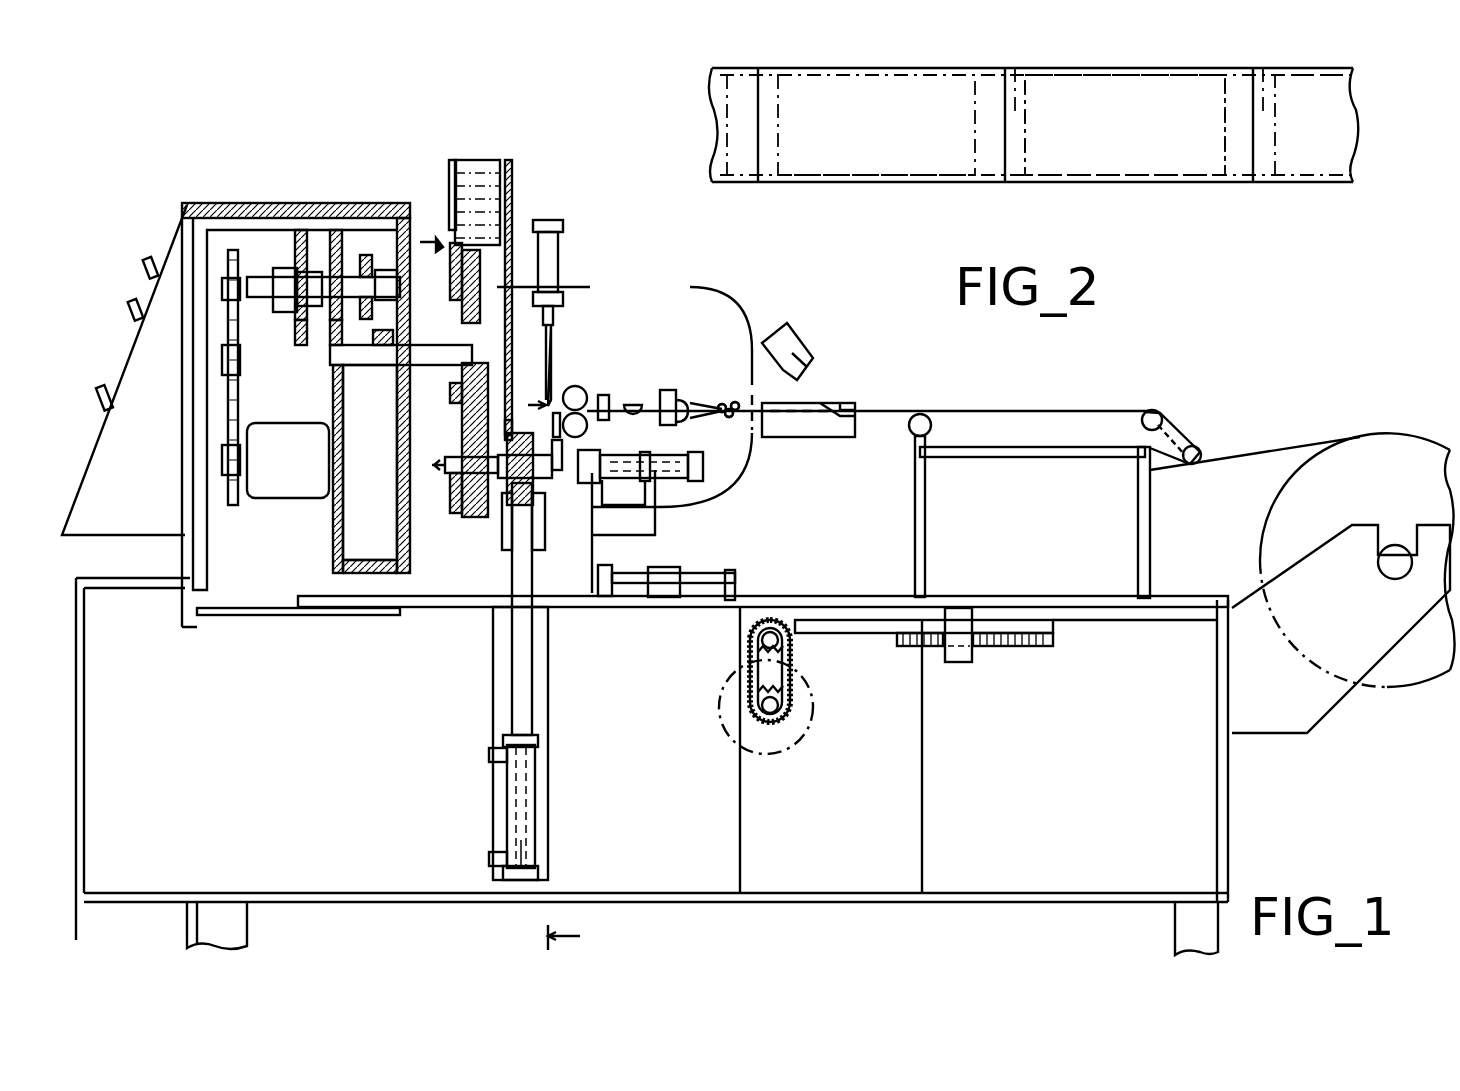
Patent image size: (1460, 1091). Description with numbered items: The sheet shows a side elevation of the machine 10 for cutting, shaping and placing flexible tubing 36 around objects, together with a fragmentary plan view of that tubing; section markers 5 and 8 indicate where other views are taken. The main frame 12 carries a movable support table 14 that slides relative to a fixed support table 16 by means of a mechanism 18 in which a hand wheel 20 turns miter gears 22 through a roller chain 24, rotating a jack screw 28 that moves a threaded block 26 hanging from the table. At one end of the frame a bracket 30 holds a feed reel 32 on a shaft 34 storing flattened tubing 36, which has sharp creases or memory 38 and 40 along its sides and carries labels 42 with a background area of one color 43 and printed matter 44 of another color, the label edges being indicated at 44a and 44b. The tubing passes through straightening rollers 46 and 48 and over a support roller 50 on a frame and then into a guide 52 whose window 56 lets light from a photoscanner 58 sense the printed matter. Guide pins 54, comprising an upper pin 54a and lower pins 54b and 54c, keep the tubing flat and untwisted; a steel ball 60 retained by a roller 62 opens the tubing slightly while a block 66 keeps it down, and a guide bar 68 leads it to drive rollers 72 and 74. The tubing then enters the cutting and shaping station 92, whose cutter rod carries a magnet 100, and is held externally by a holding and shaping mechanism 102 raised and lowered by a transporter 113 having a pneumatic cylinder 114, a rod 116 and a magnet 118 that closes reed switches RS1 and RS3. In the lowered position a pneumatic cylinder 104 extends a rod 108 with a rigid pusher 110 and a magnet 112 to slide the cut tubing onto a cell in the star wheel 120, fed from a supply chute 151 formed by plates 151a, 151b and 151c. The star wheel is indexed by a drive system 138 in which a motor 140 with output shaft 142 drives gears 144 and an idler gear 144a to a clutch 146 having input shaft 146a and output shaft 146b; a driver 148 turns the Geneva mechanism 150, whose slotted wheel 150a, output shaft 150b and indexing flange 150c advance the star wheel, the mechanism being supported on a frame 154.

In FIG. 1, the section line 5- 5 is at (624, 392).
In FIG. 1, the section line 8- 8 is at (545, 675).
In FIG. 1, the machine 10 is at (1040, 408).
In FIG. 1, the main frame 12 is at (1228, 805).
In FIG. 1, the movable support table 14 is at (633, 615).
In FIG. 1, the fixed support table 16 is at (246, 640).
In FIG. 1, the mechanism for sliding the table 18 is at (840, 676).
In FIG. 1, the rotatable hand wheel 20 is at (805, 745).
In FIG. 1, the miter gears 22 is at (760, 650).
In FIG. 1, the roller chain 24 is at (758, 690).
In FIG. 1, the threaded block 26 is at (965, 665).
In FIG. 1, the jack screw 28 is at (895, 645).
In FIG. 1, the bracket 30 is at (1328, 715).
In FIG. 1, the feed reel 32 is at (1400, 440).
In FIG. 1, the shaft 34 is at (1392, 565).
In FIG. 1, the flexible tubing 36 is at (1300, 415).
In FIG. 2, the flexible tubing 36 is at (1096, 60).
In FIG. 2, the sharp crease or memory 38 is at (1322, 182).
In FIG. 2, the sharp crease or memory 40 is at (1285, 68).
In FIG. 2, the labels 42 is at (988, 182).
In FIG. 2, the background area of one color 43 is at (1015, 68).
In FIG. 2, the printed matter 44 is at (866, 140).
In FIG. 2, the leading edge 44a is at (1028, 130).
In FIG. 2, the trailing edge 44b is at (1225, 130).
In FIG. 1, the roller 46 is at (1205, 440).
In FIG. 1, the roller 48 is at (1160, 412).
In FIG. 1, the support roller 50 is at (932, 425).
In FIG. 1, the guide 52 is at (832, 440).
In FIG. 1, the guide pins 54 is at (711, 405).
In FIG. 1, the upper pin 54a is at (735, 400).
In FIG. 1, the lower pin 54b is at (728, 418).
In FIG. 1, the lower pin 54c is at (728, 414).
In FIG. 1, the window 56 is at (838, 402).
In FIG. 1, the photoscanner 58 is at (806, 345).
In FIG. 1, the steel ball 60 is at (684, 398).
In FIG. 1, the roller 62 is at (666, 388).
In FIG. 1, the block 66 is at (633, 397).
In FIG. 1, the guide bar 68 is at (602, 392).
In FIG. 1, the drive roller 72 is at (575, 386).
In FIG. 1, the drive roller 74 is at (562, 441).
In FIG. 1, the cutting and shaping station 92 is at (534, 372).
In FIG. 1, the magnet 100 is at (678, 517).
In FIG. 1, the tube holding and shaping mechanism 102 is at (530, 495).
In FIG. 1, the pneumatic cylinder 104 is at (700, 490).
In FIG. 1, the cylinder rod 108 is at (622, 480).
In FIG. 1, the rigid pusher 110 is at (565, 507).
In FIG. 1, the magnet 112 is at (660, 482).
In FIG. 1, the transporter 113 is at (548, 712).
In FIG. 1, the pneumatic cylinder 114 is at (535, 760).
In FIG. 1, the cylinder rod 116 is at (540, 787).
In FIG. 1, the magnet 118 is at (540, 842).
In FIG. 1, the star wheel 120 is at (482, 285).
In FIG. 1, the drive system 138 is at (325, 380).
In FIG. 1, the motor 140 is at (286, 498).
In FIG. 1, the output shaft 142 is at (233, 490).
In FIG. 1, the gears 144 is at (215, 418).
In FIG. 1, the idler gear 144a is at (245, 355).
In FIG. 1, the clutch 146 is at (280, 275).
In FIG. 1, the input shaft 146a is at (248, 275).
In FIG. 1, the output shaft 146b is at (322, 275).
In FIG. 1, the driver 148 is at (364, 255).
In FIG. 1, the driven member 150 is at (337, 394).
In FIG. 1, the slotted driven wheel 150a is at (373, 400).
In FIG. 1, the output shaft 150b is at (367, 462).
In FIG. 1, the indexing output flange 150c is at (415, 500).
In FIG. 1, the supply chute 151 is at (485, 147).
In FIG. 1, the upper plate 151a is at (450, 155).
In FIG. 1, the upper plate 151b is at (512, 172).
In FIG. 1, the lower third plate 151c is at (462, 500).
In FIG. 1, the frame 154 is at (428, 275).
In FIG. 1, the reed switch RS1 is at (488, 858).
In FIG. 1, the reed switch RS3 is at (488, 755).